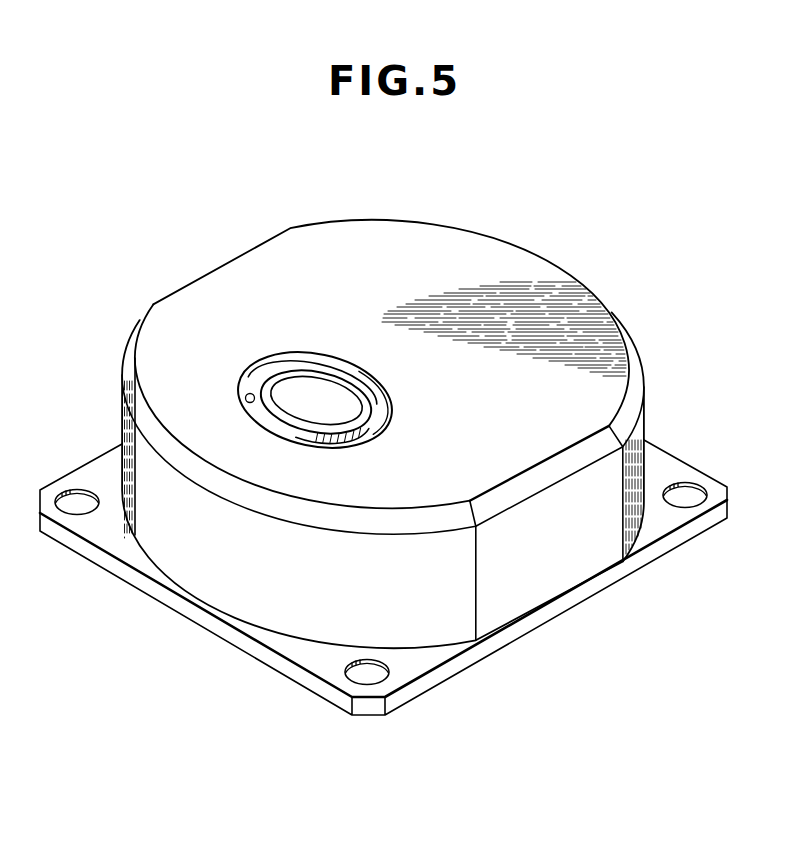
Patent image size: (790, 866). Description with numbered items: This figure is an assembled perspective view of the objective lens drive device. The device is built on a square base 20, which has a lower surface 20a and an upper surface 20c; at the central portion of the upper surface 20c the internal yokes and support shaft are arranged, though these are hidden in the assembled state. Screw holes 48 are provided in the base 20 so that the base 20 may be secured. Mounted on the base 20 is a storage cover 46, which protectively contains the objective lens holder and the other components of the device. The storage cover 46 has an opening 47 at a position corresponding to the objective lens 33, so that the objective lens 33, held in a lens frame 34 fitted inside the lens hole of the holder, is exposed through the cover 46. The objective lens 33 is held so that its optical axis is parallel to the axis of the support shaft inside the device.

The square base 20 is at (383, 545).
The lower surface 20a is at (553, 607).
The upper surface 20c is at (658, 523).
The storage cover 46 is at (123, 380).
The screw holes 48 is at (80, 500).
The objective lens 33 is at (325, 397).
The lens frame 34 is at (370, 407).
The opening 47 is at (246, 398).